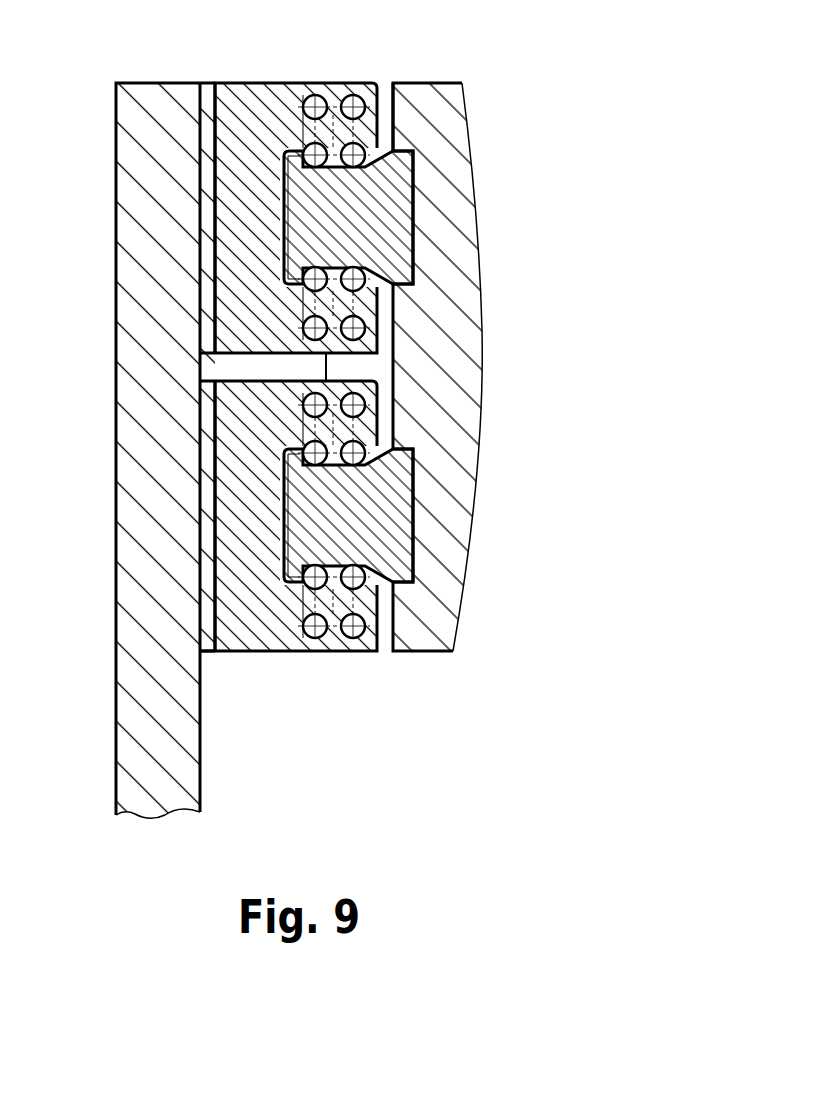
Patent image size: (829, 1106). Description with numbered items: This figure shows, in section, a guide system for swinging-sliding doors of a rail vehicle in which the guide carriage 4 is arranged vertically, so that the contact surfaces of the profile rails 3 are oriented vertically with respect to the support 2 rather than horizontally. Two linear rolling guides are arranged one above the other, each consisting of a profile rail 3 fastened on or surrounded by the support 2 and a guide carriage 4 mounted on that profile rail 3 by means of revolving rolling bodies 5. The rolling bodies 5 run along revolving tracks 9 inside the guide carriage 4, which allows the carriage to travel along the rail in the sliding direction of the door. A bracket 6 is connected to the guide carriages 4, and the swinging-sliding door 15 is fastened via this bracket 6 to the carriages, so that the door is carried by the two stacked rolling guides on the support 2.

The support 2 is at (470, 430).
The profile rail 3 is at (405, 233).
The guide carriage 4 is at (252, 97).
The rolling bodies 5 is at (358, 87).
The bracket 6 is at (116, 82).
The revolving track 9 is at (397, 103).
The swinging-sliding door 15 is at (135, 312).